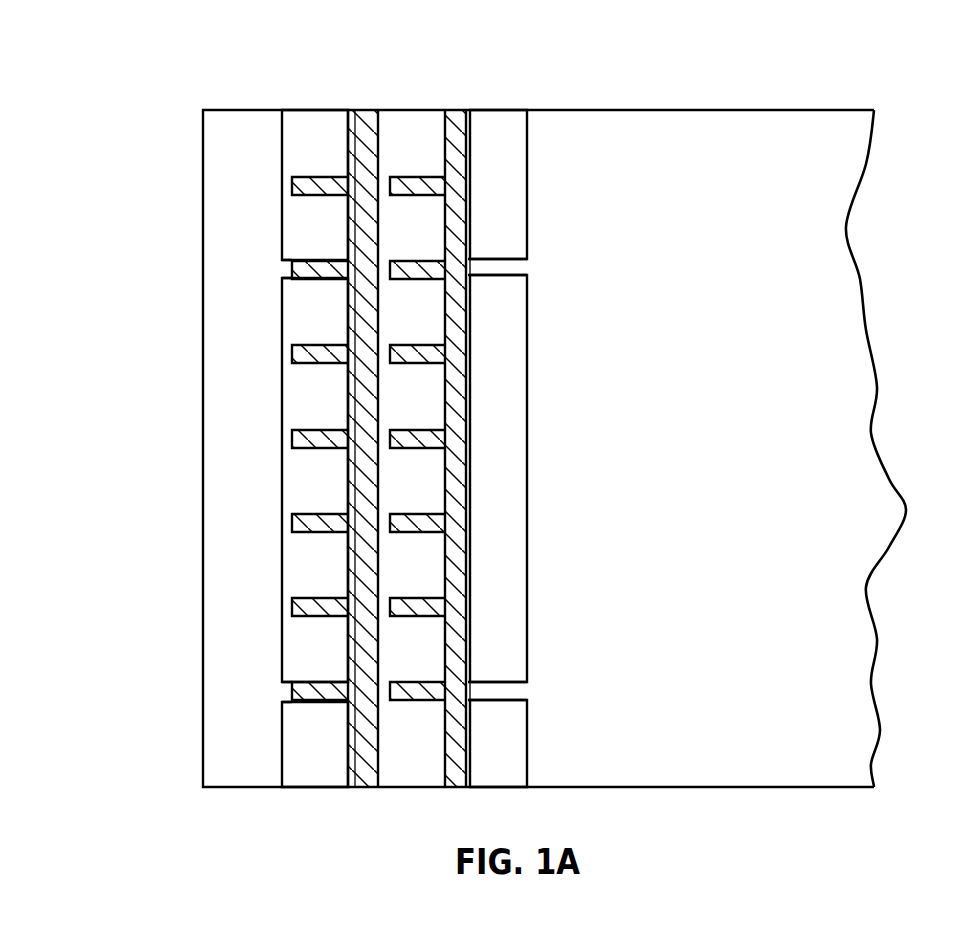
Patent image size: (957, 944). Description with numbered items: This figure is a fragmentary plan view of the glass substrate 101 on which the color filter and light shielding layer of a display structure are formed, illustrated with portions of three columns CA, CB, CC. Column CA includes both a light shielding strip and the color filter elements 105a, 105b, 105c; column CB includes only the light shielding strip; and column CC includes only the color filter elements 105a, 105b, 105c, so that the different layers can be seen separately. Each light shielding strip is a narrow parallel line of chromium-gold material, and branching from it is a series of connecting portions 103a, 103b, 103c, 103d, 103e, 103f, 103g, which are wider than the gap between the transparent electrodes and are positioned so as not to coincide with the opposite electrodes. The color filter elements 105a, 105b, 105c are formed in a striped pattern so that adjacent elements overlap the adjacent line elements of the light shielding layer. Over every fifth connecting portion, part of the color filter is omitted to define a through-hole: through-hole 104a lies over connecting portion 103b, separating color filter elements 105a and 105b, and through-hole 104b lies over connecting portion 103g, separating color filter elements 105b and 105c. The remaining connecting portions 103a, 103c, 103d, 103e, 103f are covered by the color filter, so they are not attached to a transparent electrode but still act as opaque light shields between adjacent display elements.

The glass substrate 101 is at (614, 116).
The connecting portion 103a is at (295, 183).
The connecting portion 103b is at (302, 262).
The connecting portion 103c is at (302, 348).
The connecting portion 103d is at (302, 431).
The connecting portion 103e is at (302, 518).
The connecting portion 103f is at (302, 602).
The connecting portion 103g is at (306, 686).
The through-hole 104a is at (285, 267).
The through-hole 104b is at (287, 690).
The color filter element 105a is at (288, 146).
The color filter element 105b is at (292, 483).
The color filter element 105c is at (298, 765).
The column CA is at (317, 98).
The column CB is at (412, 98).
The column CC is at (498, 98).